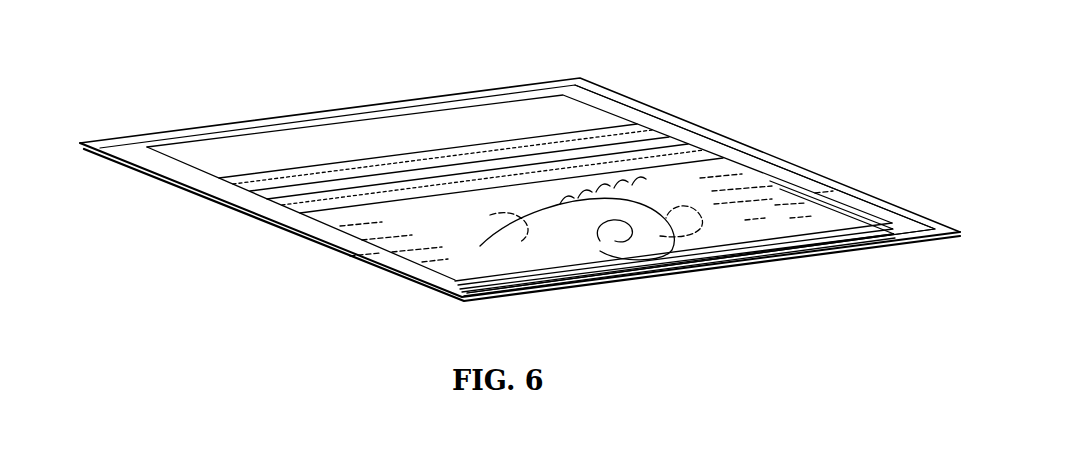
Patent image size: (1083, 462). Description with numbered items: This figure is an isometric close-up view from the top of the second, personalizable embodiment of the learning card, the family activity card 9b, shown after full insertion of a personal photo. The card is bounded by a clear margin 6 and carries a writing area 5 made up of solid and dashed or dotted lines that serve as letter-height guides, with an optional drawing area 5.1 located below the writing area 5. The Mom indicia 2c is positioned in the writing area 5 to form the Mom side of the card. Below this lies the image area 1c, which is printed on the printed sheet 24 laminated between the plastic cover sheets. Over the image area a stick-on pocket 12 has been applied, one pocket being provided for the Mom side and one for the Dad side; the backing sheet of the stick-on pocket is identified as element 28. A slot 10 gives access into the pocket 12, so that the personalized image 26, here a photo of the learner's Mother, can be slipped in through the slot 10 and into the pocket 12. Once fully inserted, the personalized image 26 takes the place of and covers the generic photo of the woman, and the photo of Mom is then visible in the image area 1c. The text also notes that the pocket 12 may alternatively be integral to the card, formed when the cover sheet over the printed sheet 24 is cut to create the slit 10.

The writing area 5 is at (440, 185).
The drawing area 5.1 is at (570, 112).
The Mom indicia 2c is at (689, 156).
The image area 1c is at (773, 184).
The clear margin 6 is at (217, 194).
The family activity card 9b is at (327, 258).
The slot 10 is at (597, 287).
The personalized image 26 is at (706, 252).
The backing sheet of the stick-on pocket 28 is at (761, 256).
The printed sheet 24 is at (761, 256).
The pocket 12 is at (835, 220).